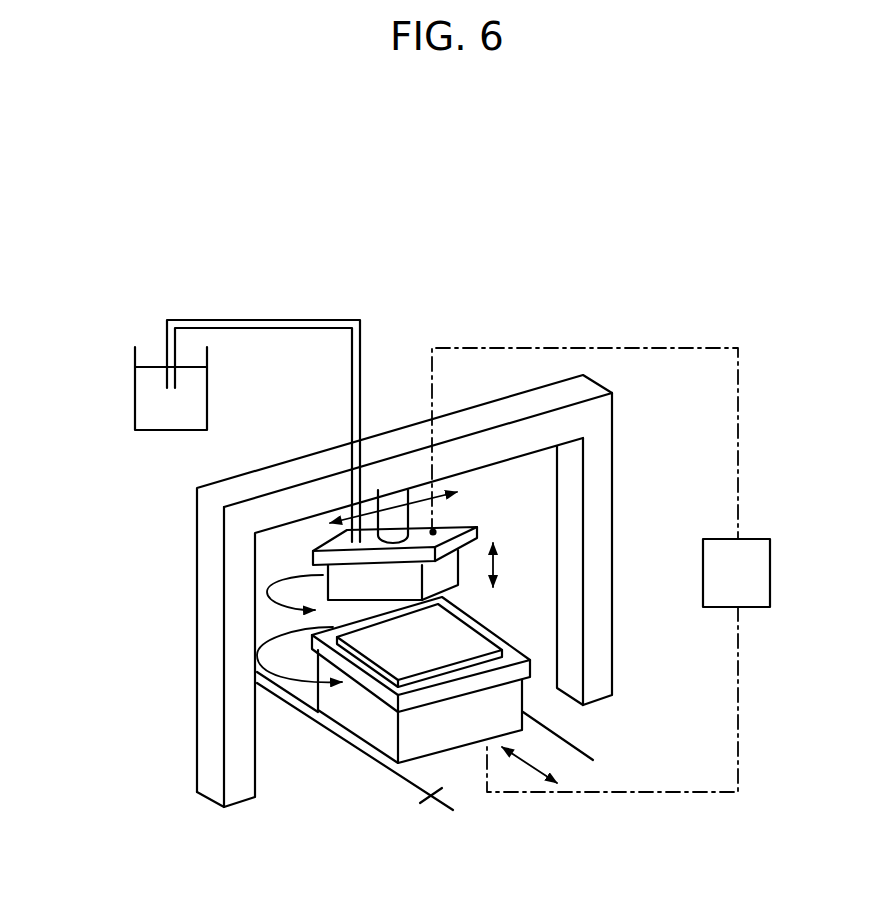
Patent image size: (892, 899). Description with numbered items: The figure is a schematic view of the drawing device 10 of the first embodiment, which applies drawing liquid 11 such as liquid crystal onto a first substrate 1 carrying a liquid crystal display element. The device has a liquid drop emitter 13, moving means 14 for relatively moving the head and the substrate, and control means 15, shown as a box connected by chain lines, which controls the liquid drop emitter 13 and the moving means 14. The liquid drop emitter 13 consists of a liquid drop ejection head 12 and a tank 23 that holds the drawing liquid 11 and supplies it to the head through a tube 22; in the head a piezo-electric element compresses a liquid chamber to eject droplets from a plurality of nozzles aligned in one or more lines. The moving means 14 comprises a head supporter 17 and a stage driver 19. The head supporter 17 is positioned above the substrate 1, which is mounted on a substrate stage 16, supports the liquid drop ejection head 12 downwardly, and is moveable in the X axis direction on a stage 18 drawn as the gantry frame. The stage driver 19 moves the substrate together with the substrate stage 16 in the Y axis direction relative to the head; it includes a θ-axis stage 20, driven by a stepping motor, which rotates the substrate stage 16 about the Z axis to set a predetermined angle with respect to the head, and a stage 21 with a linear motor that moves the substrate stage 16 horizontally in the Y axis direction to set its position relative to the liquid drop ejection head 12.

The first substrate 1 is at (390, 660).
The drawing device 10 is at (400, 300).
The drawing liquid 11 is at (198, 407).
The liquid drop ejection head 12 is at (467, 563).
The liquid drop emitter 13 is at (300, 552).
The moving means 14 is at (312, 725).
The control means 15 is at (770, 572).
The substrate stage 16 is at (510, 647).
The head supporter 17 is at (388, 518).
The stage 18 is at (208, 662).
The stage driver 19 is at (367, 860).
The θ-axis stage 20 is at (383, 737).
The stage 21 is at (421, 802).
The tube 22 is at (264, 320).
The tank 23 is at (135, 388).